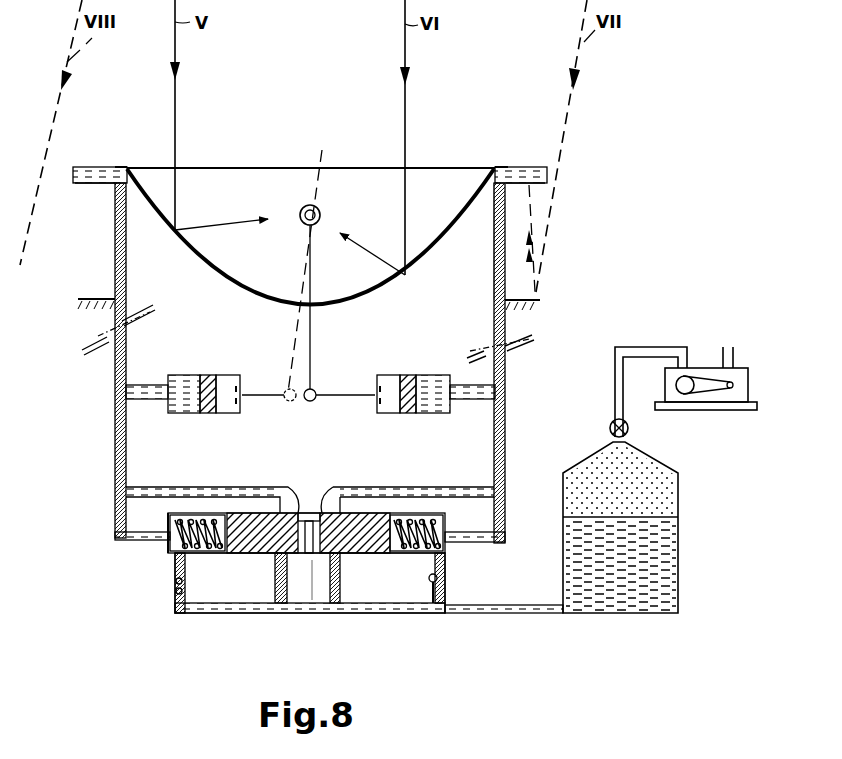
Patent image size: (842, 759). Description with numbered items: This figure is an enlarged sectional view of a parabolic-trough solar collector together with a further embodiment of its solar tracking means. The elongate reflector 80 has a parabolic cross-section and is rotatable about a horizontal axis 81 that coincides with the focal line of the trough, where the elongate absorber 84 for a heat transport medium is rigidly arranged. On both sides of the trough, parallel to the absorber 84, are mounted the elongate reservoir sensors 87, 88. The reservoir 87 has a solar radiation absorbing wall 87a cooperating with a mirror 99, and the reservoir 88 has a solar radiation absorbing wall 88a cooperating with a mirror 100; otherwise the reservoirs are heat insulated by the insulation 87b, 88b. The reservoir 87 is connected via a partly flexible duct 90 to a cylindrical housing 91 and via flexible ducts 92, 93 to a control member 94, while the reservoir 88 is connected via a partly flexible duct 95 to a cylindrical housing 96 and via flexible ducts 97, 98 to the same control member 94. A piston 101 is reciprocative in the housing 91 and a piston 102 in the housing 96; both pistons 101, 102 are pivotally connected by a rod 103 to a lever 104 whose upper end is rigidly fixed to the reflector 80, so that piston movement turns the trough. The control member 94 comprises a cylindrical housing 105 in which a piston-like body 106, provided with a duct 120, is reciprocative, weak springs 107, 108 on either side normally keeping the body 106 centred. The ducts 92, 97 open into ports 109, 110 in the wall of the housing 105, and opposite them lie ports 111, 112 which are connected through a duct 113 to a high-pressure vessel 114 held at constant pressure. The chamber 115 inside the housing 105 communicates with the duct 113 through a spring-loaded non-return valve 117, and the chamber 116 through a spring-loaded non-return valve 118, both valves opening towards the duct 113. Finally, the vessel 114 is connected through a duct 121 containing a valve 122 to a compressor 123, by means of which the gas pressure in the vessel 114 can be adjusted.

The reflector 80 is at (202, 266).
The horizontal axis 81 is at (312, 260).
The absorber 84 is at (321, 216).
The reservoir sensor 87 is at (92, 163).
The solar radiation absorbing wall 87a is at (97, 184).
The heat insulation 87b is at (118, 166).
The reservoir sensor 88 is at (527, 163).
The solar radiation absorbing wall 88a is at (546, 186).
The heat insulation 88b is at (515, 167).
The partly flexible duct 90 is at (122, 386).
The cylindrical housing 91 is at (188, 375).
The flexible duct 92 is at (127, 462).
The flexible duct 93 is at (114, 503).
The control member 94 is at (307, 510).
The partly flexible duct 95 is at (494, 290).
The cylindrical housing 96 is at (390, 375).
The flexible duct 97 is at (494, 472).
The flexible duct 98 is at (492, 546).
The mirror 99 is at (98, 298).
The mirror 100 is at (520, 300).
The piston 101 is at (211, 375).
The piston 102 is at (414, 375).
The rod 103 is at (280, 399).
The lever 104 is at (312, 367).
The cylindrical housing 105 is at (202, 556).
The piston-like body 106 is at (250, 548).
The weak spring 107 is at (166, 546).
The weak spring 108 is at (445, 558).
The port 109 is at (292, 497).
The port 110 is at (331, 497).
The port 111 is at (307, 578).
The port 112 is at (340, 558).
The duct 113 is at (383, 606).
The high-pressure vessel 114 is at (678, 573).
The chamber 115 is at (172, 567).
The chamber 116 is at (416, 552).
The spring-loaded non-return valve 117 is at (172, 592).
The spring-loaded non-return valve 118 is at (438, 594).
The duct 120 is at (316, 557).
The duct 121 is at (614, 394).
The valve 122 is at (609, 430).
The compressor 123 is at (710, 367).